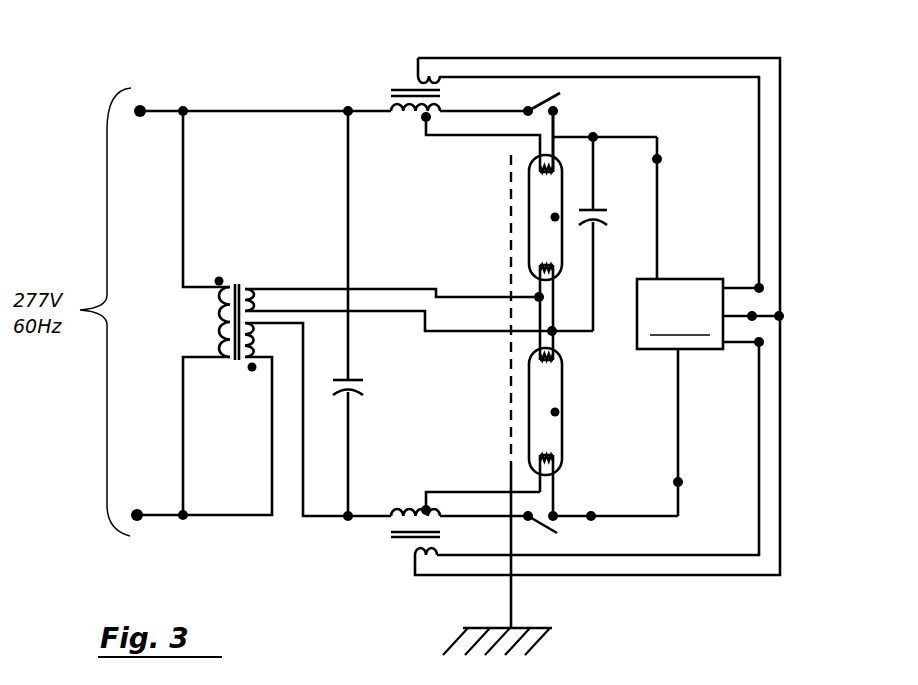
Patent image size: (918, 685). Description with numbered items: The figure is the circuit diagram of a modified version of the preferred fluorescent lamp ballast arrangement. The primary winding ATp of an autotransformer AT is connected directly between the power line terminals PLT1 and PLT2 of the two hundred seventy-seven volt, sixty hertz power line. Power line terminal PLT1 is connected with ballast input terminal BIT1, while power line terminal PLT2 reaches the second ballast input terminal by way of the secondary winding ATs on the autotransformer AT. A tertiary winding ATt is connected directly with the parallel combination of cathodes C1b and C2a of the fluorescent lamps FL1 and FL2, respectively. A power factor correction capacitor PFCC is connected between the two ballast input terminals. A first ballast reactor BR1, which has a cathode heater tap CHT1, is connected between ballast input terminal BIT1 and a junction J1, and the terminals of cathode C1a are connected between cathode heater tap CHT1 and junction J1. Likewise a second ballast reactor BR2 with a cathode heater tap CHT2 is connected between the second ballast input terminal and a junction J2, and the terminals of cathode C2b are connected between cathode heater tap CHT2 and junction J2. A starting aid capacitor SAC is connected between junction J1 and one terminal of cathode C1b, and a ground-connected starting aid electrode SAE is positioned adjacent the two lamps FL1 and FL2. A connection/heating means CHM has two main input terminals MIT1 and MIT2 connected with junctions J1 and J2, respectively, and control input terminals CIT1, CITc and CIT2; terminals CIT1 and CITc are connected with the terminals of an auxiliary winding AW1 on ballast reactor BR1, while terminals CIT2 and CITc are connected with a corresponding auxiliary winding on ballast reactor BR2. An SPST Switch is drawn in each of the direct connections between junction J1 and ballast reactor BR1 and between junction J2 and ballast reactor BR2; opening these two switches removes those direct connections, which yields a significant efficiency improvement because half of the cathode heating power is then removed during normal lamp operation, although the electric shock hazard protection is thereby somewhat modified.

The power line terminal PLT1 is at (142, 106).
The power line terminal PLT2 is at (140, 520).
The ballast input terminal BIT1 is at (347, 108).
The first ballast reactor BR1 is at (398, 86).
The auxiliary winding AW1 is at (430, 70).
The cathode heater tap CHT1 is at (424, 119).
The cathode heater tap CHT2 is at (424, 508).
The second ballast reactor BR2 is at (397, 548).
The SPST switch SPST Switch is at (541, 100).
The junction J1 is at (594, 133).
The junction J2 is at (615, 528).
The main input terminal MIT1 is at (660, 158).
The main input terminal MIT2 is at (684, 480).
The starting aid capacitor SAC is at (632, 199).
The fluorescent lamp FL1 is at (528, 176).
The fluorescent lamp FL2 is at (566, 458).
The cathode C1a is at (548, 178).
The cathode C1b is at (545, 260).
The cathode C2a is at (547, 372).
The cathode C2b is at (547, 458).
The control input terminal CIT1 is at (762, 283).
The control input terminal CITc is at (755, 313).
The control input terminal CIT2 is at (762, 345).
The connection/heating means CHM is at (680, 314).
The autotransformer AT is at (237, 272).
The primary winding ATp is at (215, 326).
The tertiary winding ATt is at (257, 300).
The secondary winding ATs is at (264, 338).
The power factor correction capacitor PFCC is at (354, 380).
The starting aid electrode SAE is at (510, 400).